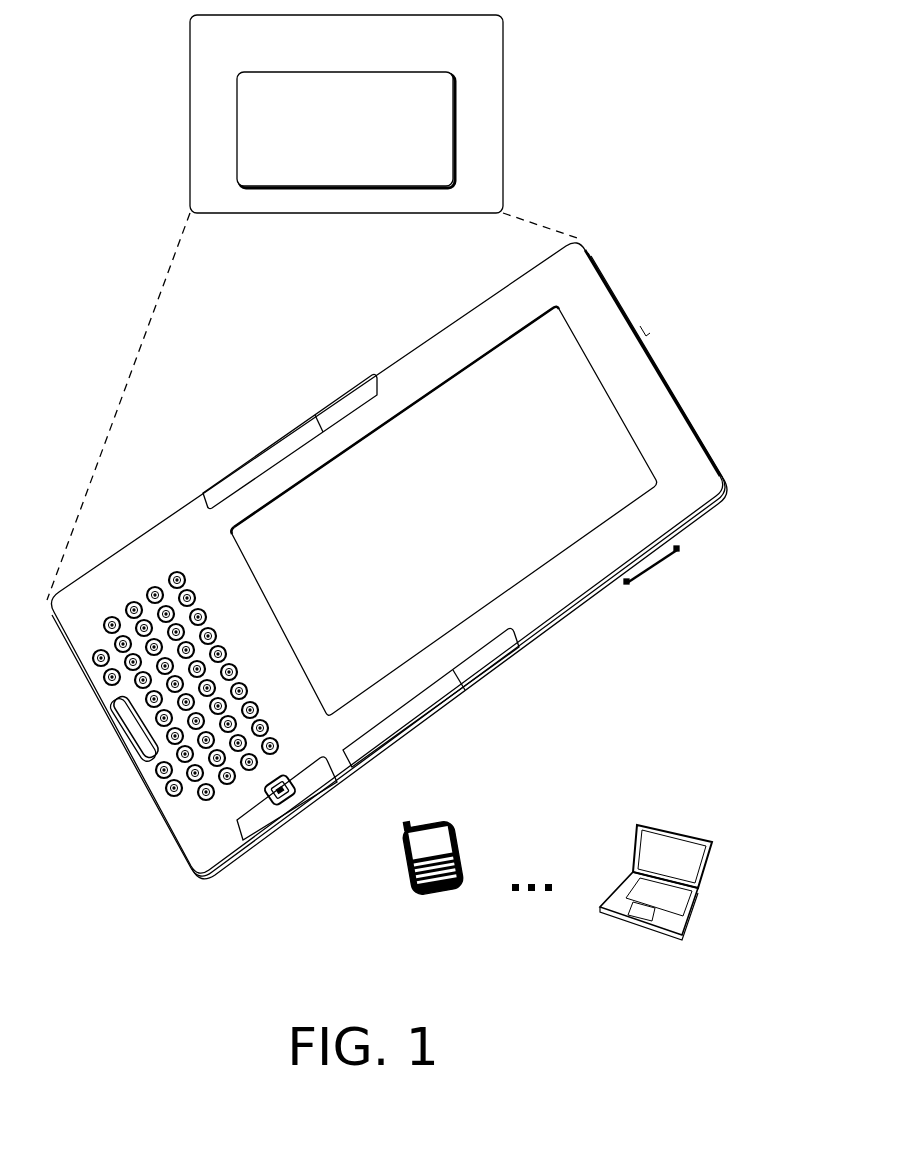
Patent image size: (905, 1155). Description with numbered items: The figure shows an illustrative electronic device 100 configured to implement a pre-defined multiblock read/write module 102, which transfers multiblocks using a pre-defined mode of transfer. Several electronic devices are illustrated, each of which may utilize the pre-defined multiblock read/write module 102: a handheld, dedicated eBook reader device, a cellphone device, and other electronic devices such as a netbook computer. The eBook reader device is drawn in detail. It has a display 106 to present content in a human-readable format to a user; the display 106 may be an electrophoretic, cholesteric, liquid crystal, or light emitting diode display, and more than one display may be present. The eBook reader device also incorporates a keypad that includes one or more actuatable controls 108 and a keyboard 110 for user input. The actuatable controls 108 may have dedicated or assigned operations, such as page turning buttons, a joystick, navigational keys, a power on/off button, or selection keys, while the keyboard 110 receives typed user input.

The electronic device 100 is at (334, 66).
The pre-defined multiblock read/write module 102 is at (334, 172).
The display 106 is at (560, 343).
The actuatable controls 108 is at (290, 442).
The keyboard 110 is at (167, 782).